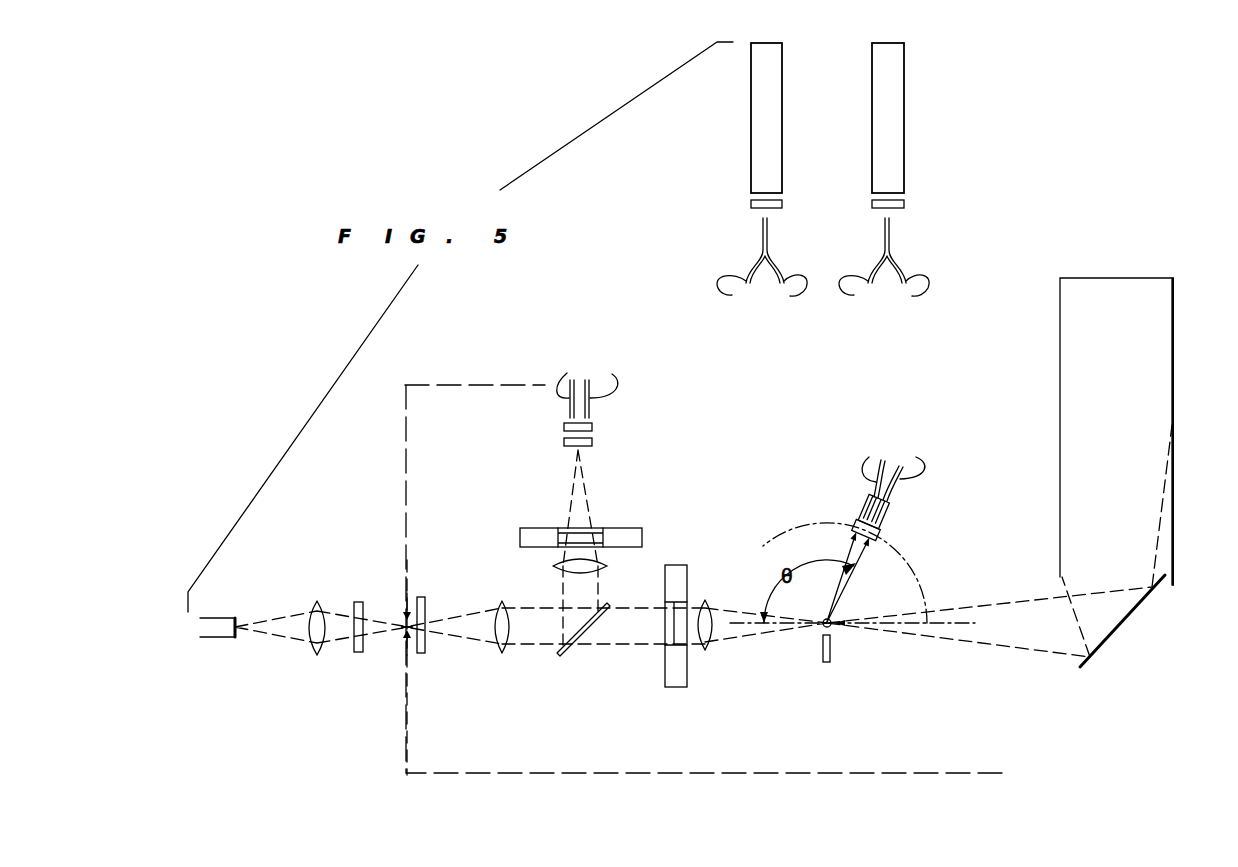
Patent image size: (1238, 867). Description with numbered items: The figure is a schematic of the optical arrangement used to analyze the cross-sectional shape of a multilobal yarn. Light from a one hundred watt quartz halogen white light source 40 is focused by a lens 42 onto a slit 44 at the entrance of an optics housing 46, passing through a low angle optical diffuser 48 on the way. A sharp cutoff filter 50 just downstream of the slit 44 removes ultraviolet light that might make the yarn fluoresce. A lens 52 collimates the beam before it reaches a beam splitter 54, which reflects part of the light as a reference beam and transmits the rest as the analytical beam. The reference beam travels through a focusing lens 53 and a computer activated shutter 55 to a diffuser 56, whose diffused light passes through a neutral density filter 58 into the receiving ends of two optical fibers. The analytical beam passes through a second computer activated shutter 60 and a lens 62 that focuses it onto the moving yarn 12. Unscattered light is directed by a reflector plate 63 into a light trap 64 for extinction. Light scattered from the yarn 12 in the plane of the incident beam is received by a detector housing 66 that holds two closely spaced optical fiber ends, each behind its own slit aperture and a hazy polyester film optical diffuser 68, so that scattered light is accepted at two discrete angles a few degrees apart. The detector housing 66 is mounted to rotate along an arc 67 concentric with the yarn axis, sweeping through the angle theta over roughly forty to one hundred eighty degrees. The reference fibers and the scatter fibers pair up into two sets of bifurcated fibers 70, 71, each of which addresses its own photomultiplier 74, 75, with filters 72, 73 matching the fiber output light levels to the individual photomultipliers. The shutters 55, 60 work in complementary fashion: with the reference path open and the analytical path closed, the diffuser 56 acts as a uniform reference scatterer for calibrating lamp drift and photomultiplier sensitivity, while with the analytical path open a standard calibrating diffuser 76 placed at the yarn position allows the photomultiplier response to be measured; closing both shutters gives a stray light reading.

The moving yarn 12 is at (750, 621).
The white light source 40 is at (223, 630).
The lens 42 is at (315, 656).
The slit 44 is at (403, 625).
The optics housing 46 is at (582, 773).
The low angle optical diffuser 48 is at (358, 653).
The sharp cutoff filter 50 is at (421, 654).
The lens 52 is at (502, 654).
The focusing lens 53 is at (556, 567).
The beam splitter 54 is at (564, 650).
The computer activated shutter 55 is at (612, 528).
The diffuser 56 is at (563, 442).
The neutral density filter 58 is at (593, 427).
The computer activated shutter 60 is at (673, 688).
The lens 62 is at (706, 652).
The reflector plate 63 is at (1118, 626).
The light trap 64 is at (1171, 361).
The detector housing 66 is at (858, 523).
The arc 67 is at (925, 581).
The optical diffuser 68 is at (882, 533).
The bifurcated fiber 70 is at (763, 240).
The bifurcated fiber 71 is at (891, 237).
The filter 72 is at (750, 205).
The filter 73 is at (905, 204).
The photomultiplier 74 is at (757, 135).
The photomultiplier 75 is at (898, 91).
The standard calibrating diffuser 76 is at (826, 664).